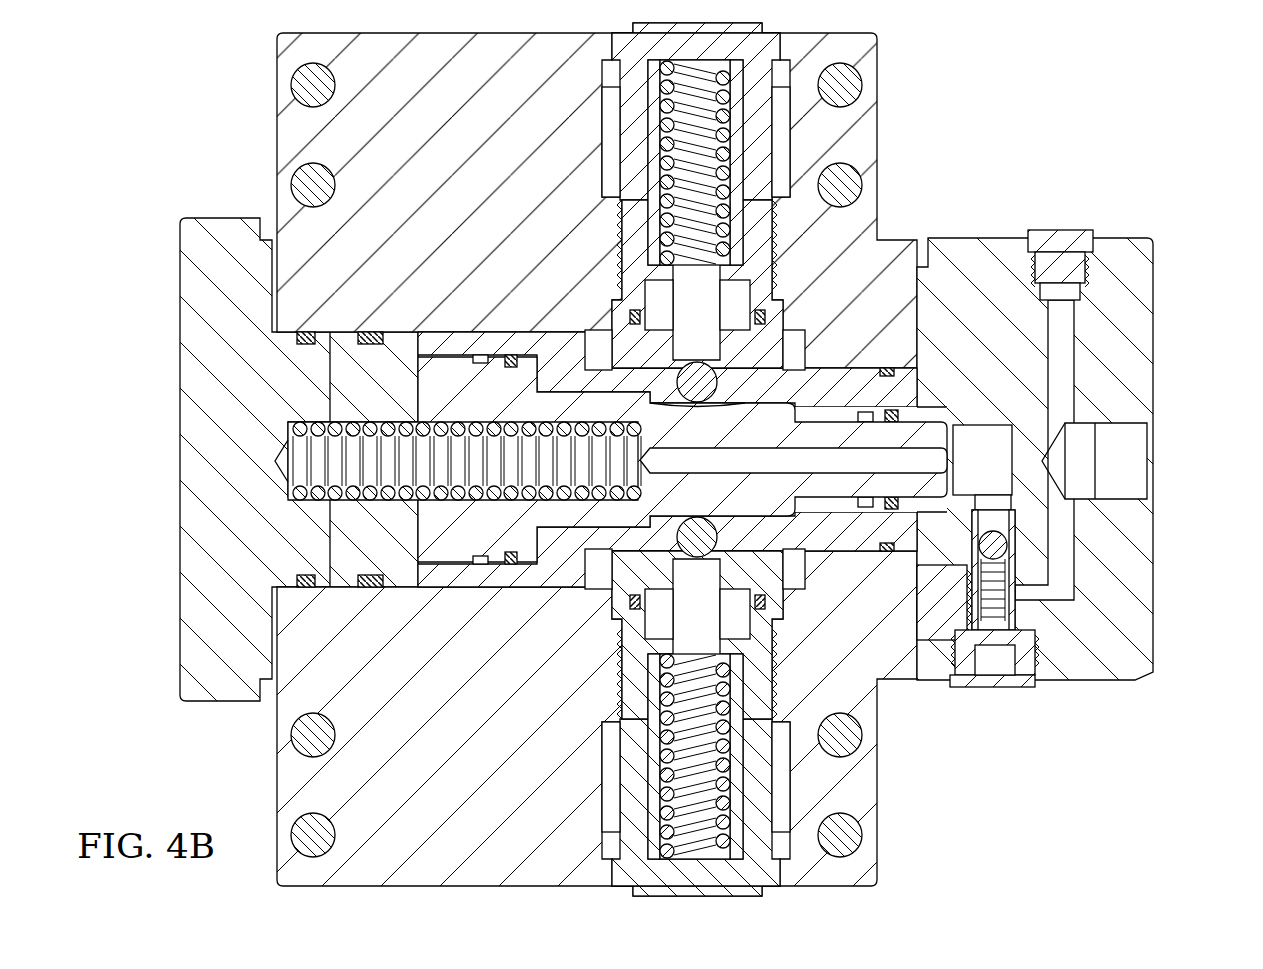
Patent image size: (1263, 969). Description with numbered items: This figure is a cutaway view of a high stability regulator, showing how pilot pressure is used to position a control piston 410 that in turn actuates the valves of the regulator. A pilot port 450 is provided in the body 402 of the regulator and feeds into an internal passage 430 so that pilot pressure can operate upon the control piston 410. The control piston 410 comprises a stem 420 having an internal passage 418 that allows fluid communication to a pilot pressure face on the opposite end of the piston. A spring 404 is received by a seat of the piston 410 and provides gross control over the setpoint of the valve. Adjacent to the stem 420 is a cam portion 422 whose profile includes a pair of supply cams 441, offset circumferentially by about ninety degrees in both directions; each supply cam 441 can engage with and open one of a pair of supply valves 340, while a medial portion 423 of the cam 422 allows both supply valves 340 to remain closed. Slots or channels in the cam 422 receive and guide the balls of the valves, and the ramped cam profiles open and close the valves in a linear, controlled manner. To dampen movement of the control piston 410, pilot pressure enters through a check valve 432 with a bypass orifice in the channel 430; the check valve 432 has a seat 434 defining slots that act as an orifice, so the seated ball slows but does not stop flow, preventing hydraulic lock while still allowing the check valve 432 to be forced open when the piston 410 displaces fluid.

The supply valve 340 is at (628, 159).
The body 402 is at (285, 126).
The spring 404 is at (300, 470).
The control piston 410 is at (831, 420).
The internal passage 418 is at (830, 503).
The stem 420 is at (930, 437).
The cam portion 422 is at (720, 497).
The medial portion 423 is at (722, 415).
The internal passage 430 is at (1065, 555).
The check valve 432 is at (1015, 598).
The seat 434 is at (957, 543).
The supply cam 441 is at (630, 402).
The pilot port 450 is at (1130, 462).